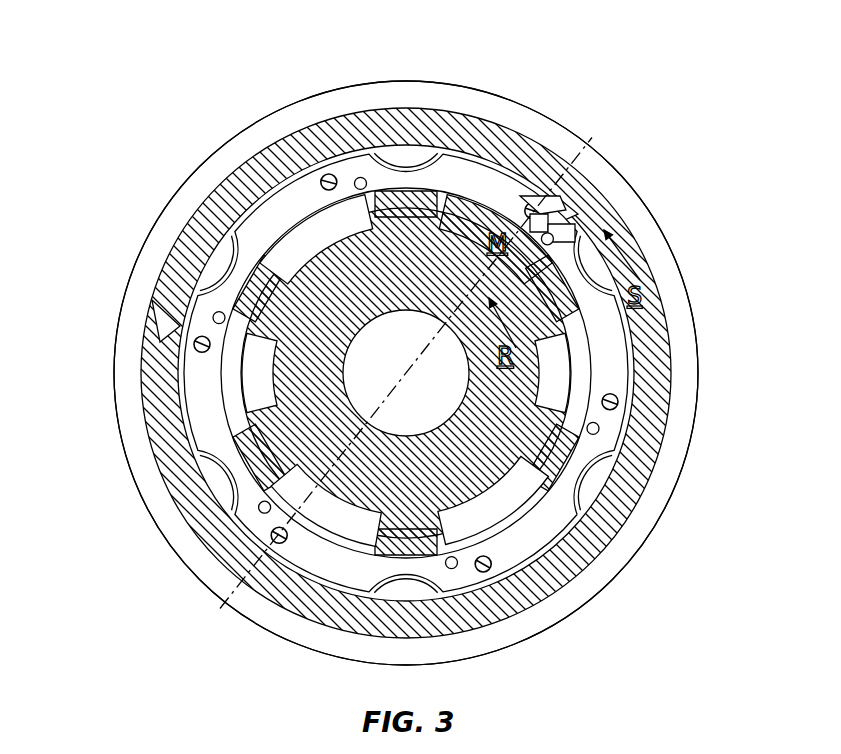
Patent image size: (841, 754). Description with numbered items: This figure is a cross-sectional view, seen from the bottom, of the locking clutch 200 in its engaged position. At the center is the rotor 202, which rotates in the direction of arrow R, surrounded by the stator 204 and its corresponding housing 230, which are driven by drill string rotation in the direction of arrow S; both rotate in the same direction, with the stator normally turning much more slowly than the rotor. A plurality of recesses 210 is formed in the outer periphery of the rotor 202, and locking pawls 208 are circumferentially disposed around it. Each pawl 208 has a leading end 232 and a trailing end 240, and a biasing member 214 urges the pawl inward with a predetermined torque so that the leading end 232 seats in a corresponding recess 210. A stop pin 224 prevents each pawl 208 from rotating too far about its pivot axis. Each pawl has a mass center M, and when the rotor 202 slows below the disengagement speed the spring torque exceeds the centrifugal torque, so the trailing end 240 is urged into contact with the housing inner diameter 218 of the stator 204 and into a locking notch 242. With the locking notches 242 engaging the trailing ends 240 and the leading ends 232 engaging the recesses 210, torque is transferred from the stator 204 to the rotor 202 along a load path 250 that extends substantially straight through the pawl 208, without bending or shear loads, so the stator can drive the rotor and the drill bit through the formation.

The locking clutch 200 is at (482, 58).
The rotor 202 is at (406, 381).
The stator 204 is at (317, 133).
The locking pawl 208 is at (480, 205).
The recess 210 is at (460, 275).
The biasing member 214 is at (575, 232).
The housing inner diameter 218 is at (382, 148).
The stop pin 224 is at (554, 240).
The housing 230 is at (243, 142).
The leading end 232 is at (432, 240).
The trailing end 240 is at (548, 222).
The locking notch 242 is at (152, 305).
The load path 250 is at (535, 200).